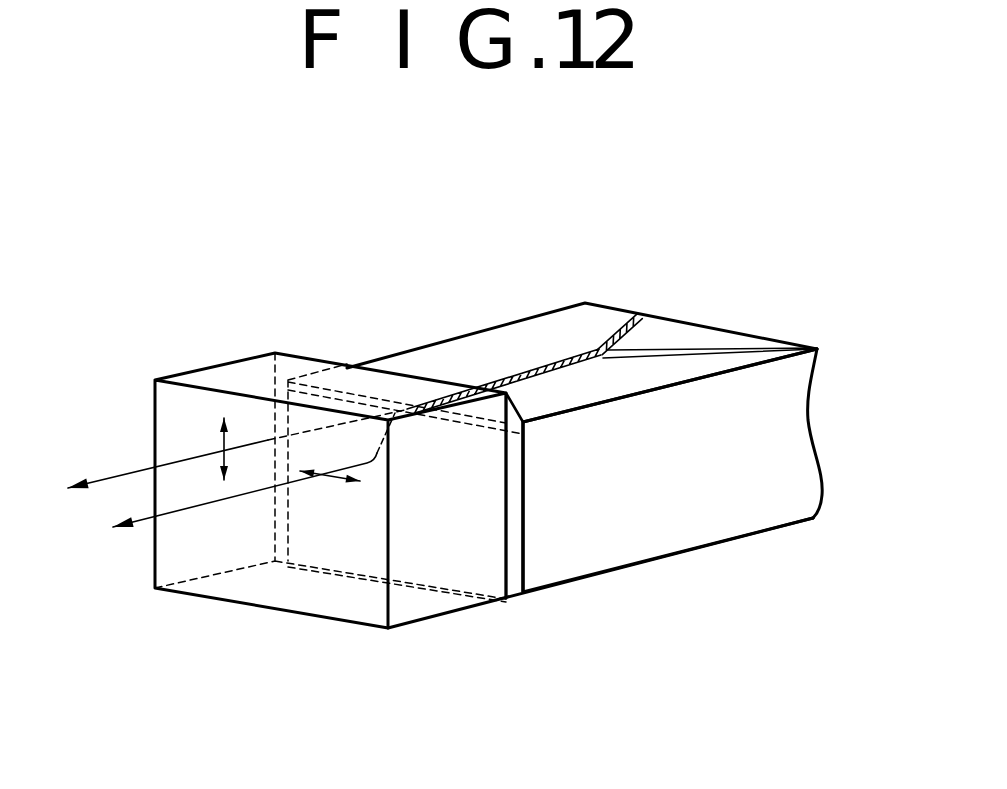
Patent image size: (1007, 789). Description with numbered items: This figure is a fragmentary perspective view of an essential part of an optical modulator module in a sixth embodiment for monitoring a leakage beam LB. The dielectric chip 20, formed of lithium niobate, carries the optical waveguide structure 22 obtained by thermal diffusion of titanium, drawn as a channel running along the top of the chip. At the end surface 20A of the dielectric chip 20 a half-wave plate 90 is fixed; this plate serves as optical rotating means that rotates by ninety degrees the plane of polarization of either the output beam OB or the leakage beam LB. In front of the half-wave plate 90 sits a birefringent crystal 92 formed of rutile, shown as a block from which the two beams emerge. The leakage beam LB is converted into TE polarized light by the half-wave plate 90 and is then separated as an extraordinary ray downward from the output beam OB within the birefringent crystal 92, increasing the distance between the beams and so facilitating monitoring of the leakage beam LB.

The dielectric chip 20 is at (723, 524).
The end surface 20A is at (522, 553).
The optical waveguide structure 22 is at (555, 354).
The half-wave plate 90 is at (514, 469).
The birefringent crystal 92 is at (398, 608).
The output beam OB is at (130, 470).
The leakage beam LB is at (193, 508).